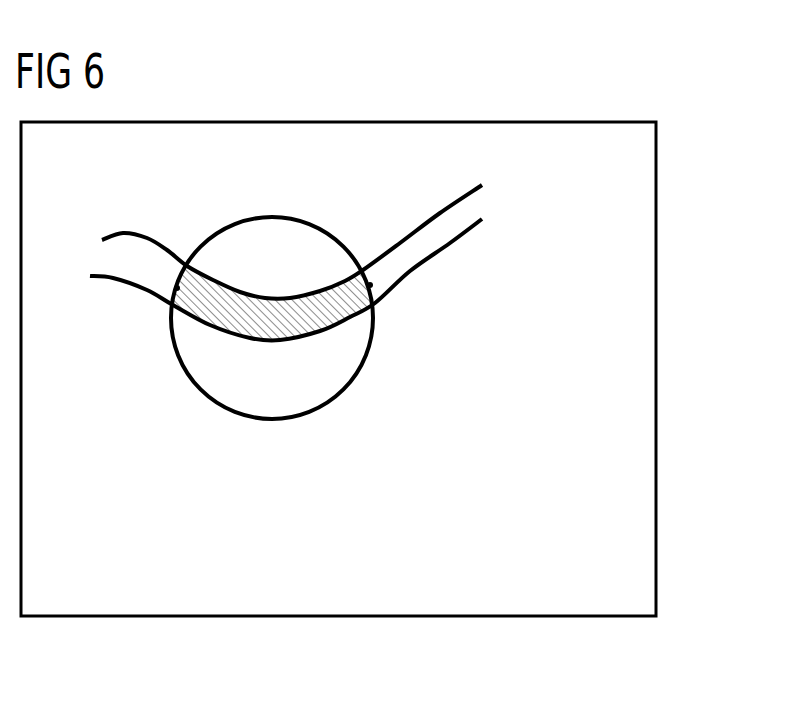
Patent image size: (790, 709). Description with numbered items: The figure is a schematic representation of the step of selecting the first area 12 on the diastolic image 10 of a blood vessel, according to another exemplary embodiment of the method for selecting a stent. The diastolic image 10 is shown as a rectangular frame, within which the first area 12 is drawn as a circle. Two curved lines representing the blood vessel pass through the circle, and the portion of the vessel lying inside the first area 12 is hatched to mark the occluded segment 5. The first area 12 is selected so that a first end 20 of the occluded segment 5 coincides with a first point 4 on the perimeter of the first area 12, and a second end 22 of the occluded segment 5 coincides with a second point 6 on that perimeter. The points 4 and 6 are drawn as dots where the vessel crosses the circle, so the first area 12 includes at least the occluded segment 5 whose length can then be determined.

The diastolic image 10 is at (657, 145).
The first area 12 is at (350, 383).
The first end of the occluded segment 20 is at (165, 274).
The second end of the occluded segment 22 is at (386, 278).
The first point 4 is at (177, 288).
The second point 6 is at (370, 285).
The occluded segment 5 is at (273, 287).